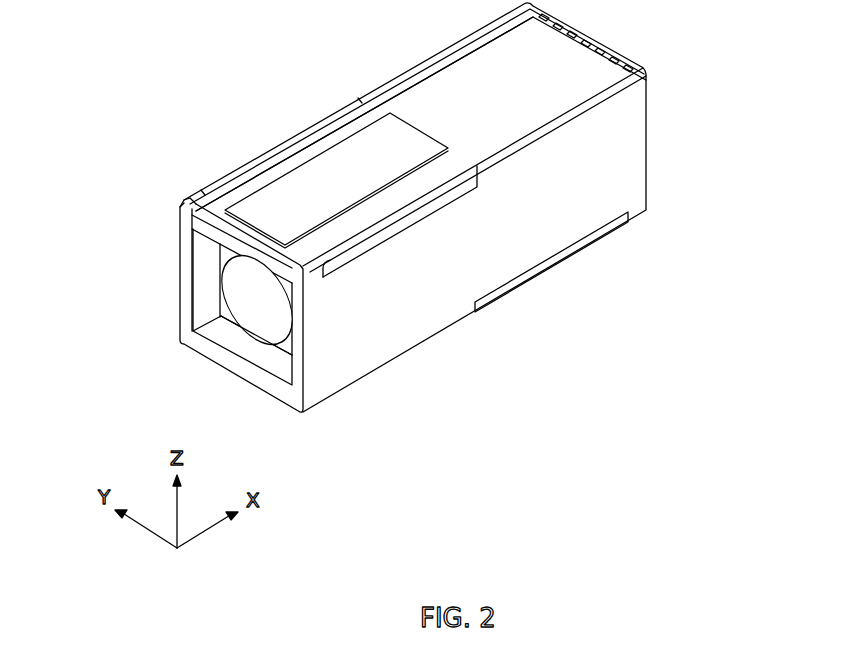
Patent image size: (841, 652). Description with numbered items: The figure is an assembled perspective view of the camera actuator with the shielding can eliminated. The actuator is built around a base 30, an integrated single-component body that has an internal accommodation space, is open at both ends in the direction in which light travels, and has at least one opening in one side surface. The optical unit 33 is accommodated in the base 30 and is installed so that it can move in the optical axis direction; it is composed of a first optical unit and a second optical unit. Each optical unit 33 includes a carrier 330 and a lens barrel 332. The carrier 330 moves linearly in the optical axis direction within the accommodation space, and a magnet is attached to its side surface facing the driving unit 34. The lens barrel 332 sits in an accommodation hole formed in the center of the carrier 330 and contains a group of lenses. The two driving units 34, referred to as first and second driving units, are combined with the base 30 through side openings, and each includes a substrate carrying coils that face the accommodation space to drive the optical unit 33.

The base 30 is at (368, 352).
The optical unit 33 is at (157, 305).
The lens barrel 332 is at (243, 291).
The carrier 330 is at (280, 346).
The driving unit 34 is at (218, 179).